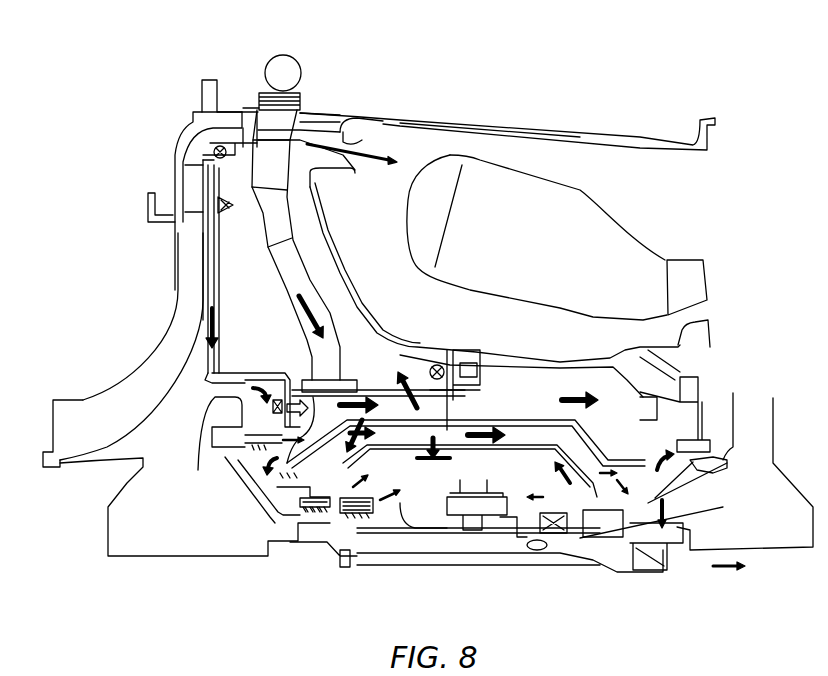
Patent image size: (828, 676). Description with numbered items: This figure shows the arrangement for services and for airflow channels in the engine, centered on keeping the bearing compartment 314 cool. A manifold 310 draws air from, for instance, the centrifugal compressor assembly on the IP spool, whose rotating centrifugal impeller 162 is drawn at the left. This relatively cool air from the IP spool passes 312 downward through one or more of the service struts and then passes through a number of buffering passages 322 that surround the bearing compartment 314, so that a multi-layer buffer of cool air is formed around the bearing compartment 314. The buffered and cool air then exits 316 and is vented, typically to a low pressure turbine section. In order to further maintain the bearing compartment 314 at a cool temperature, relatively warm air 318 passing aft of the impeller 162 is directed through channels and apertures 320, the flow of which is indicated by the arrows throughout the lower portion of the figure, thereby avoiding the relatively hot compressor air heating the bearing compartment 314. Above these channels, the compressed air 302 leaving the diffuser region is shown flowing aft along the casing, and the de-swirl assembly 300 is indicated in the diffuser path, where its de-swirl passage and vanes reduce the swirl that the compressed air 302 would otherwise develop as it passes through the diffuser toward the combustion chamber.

The manifold 310 is at (288, 57).
The de-swirl assembly 300 is at (318, 95).
The compressed air 302 is at (375, 143).
The centrifugal impeller 162 is at (83, 413).
The relatively warm air 318 is at (210, 330).
The passage of cool air 312 is at (300, 318).
The exit of buffered cool air 316 is at (440, 390).
The channels and apertures 320 is at (578, 393).
The buffering passages 322 is at (327, 470).
The bearing compartment 314 is at (423, 500).